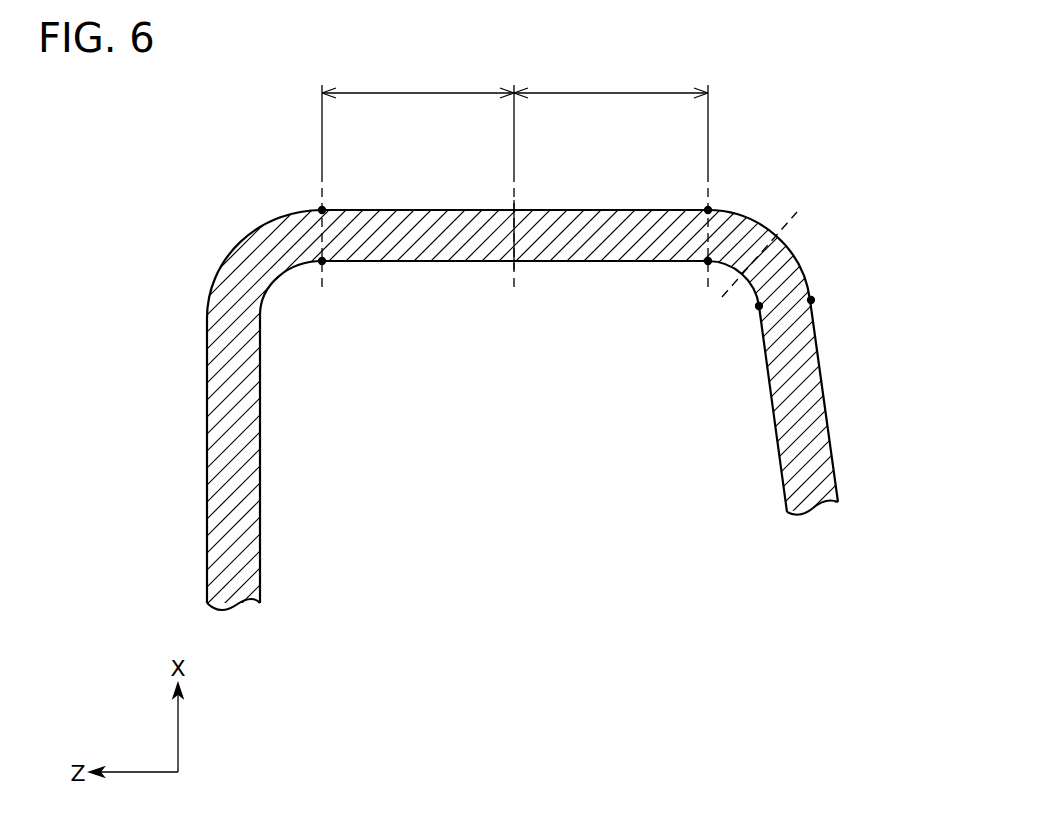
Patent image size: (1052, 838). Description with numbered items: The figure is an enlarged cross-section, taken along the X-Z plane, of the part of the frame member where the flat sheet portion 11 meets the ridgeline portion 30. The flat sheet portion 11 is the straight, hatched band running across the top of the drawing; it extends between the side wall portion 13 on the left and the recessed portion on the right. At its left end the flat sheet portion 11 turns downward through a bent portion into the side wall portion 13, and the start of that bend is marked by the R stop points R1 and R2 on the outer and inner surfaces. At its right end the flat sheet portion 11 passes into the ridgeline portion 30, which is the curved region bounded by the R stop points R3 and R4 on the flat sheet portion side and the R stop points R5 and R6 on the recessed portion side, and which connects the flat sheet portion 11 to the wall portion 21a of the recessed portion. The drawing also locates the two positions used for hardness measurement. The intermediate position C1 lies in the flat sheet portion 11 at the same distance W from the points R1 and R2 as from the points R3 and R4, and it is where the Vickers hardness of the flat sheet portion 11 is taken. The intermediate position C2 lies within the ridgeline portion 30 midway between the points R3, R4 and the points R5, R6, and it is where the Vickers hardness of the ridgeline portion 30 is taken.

The ridgeline portion 30 is at (526, 358).
The flat sheet portion 11 is at (430, 208).
The side wall portion 13 is at (223, 427).
The wall portion 21a is at (805, 388).
The R stop point R1 is at (322, 210).
The R stop point R2 is at (322, 261).
The R stop point R3 is at (708, 210).
The R stop point R4 is at (708, 261).
The R stop point R5 is at (812, 300).
The R stop point R6 is at (759, 306).
The intermediate position C1 is at (515, 236).
The intermediate position C2 is at (785, 227).
The distance W is at (515, 178).